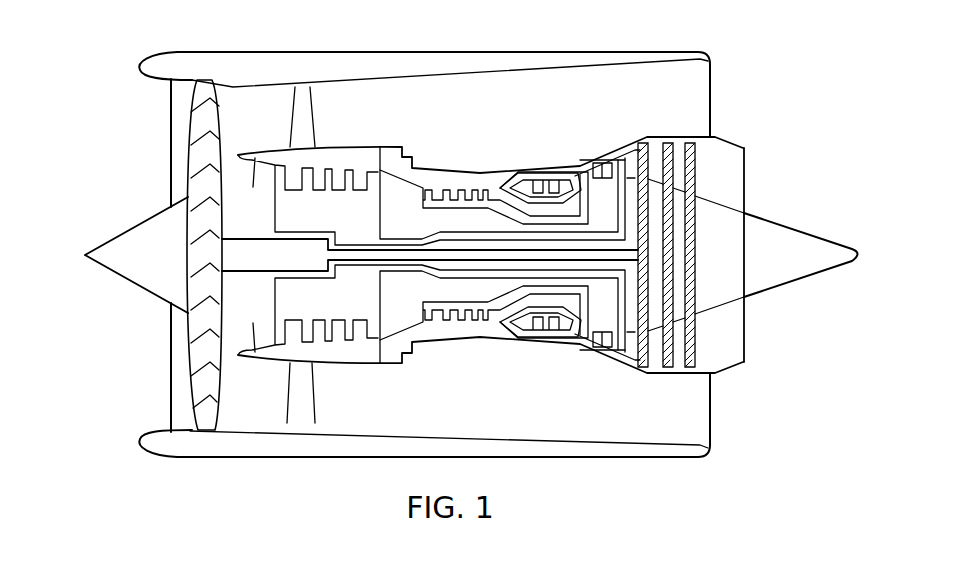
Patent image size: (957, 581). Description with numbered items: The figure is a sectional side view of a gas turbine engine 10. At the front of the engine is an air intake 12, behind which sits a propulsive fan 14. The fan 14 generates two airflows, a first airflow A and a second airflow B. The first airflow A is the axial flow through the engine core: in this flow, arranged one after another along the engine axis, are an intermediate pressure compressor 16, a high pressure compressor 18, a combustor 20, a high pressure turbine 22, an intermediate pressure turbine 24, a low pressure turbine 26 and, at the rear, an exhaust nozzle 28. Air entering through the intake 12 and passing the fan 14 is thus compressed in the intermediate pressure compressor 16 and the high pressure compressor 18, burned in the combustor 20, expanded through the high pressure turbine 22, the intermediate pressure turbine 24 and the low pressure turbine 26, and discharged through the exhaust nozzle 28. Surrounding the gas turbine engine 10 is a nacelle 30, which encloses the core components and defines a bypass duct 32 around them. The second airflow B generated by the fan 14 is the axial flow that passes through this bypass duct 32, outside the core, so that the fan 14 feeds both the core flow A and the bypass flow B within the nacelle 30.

The gas turbine engine 10 is at (126, 52).
The air intake 12 is at (182, 113).
The propulsive fan 14 is at (197, 80).
The intermediate pressure compressor 16 is at (327, 203).
The high pressure compressor 18 is at (452, 197).
The combustor 20 is at (543, 180).
The high pressure turbine 22 is at (583, 172).
The intermediate pressure turbine 24 is at (628, 172).
The low pressure turbine 26 is at (728, 137).
The exhaust nozzle 28 is at (722, 165).
The nacelle 30 is at (271, 82).
The bypass duct 32 is at (428, 117).
The airflow A is at (240, 173).
The airflow B is at (240, 127).